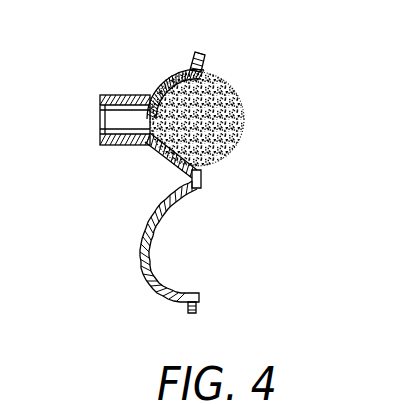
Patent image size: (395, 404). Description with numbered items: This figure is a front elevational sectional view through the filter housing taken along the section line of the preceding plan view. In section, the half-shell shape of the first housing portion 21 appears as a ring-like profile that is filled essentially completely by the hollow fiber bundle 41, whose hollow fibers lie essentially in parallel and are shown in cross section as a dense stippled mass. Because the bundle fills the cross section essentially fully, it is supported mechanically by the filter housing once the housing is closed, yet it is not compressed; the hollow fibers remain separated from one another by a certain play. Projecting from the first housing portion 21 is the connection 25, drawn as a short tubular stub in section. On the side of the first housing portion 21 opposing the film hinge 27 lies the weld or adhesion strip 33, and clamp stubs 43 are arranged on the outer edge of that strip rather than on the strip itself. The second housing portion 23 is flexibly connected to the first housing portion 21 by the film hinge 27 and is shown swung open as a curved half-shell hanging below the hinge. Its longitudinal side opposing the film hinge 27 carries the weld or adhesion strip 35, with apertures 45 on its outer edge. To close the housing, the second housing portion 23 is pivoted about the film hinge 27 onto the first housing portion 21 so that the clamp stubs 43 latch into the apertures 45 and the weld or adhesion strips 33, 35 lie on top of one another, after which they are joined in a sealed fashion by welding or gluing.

The first half-shell-shaped housing portion 21 is at (160, 85).
The second half-shell-shaped housing portion 23 is at (138, 243).
The connection 25 is at (110, 95).
The film hinge 27 is at (191, 178).
The weld or adhesion strip 33 is at (203, 62).
The weld or adhesion strip 35 is at (200, 300).
The hollow fiber bundle 41 is at (237, 92).
The clamp stubs 43 is at (194, 56).
The apertures 45 is at (197, 311).